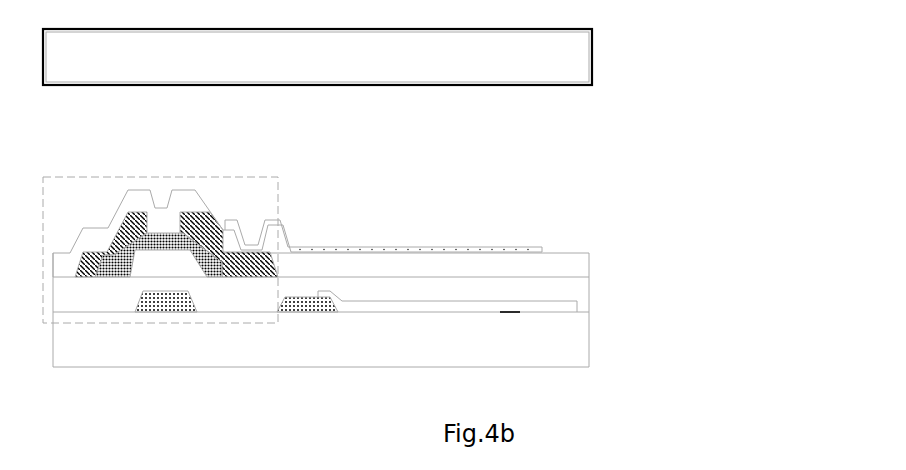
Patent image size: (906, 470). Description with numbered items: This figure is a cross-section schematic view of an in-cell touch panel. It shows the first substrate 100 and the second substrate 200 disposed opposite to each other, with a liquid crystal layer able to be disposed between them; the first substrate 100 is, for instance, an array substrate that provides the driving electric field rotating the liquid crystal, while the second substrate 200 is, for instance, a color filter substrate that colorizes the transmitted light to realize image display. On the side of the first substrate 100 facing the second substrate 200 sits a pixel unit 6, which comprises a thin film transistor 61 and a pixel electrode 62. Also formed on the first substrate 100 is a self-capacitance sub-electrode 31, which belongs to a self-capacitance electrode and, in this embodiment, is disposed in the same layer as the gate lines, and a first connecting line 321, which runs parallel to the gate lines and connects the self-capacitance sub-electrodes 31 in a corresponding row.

The second substrate 200 is at (615, 53).
The first substrate 100 is at (628, 306).
The first connecting line 321 is at (254, 342).
The self-capacitance sub-electrode 31 is at (460, 263).
The pixel unit 6 is at (297, 214).
The thin film transistor 61 is at (206, 217).
The pixel electrode 62 is at (383, 228).